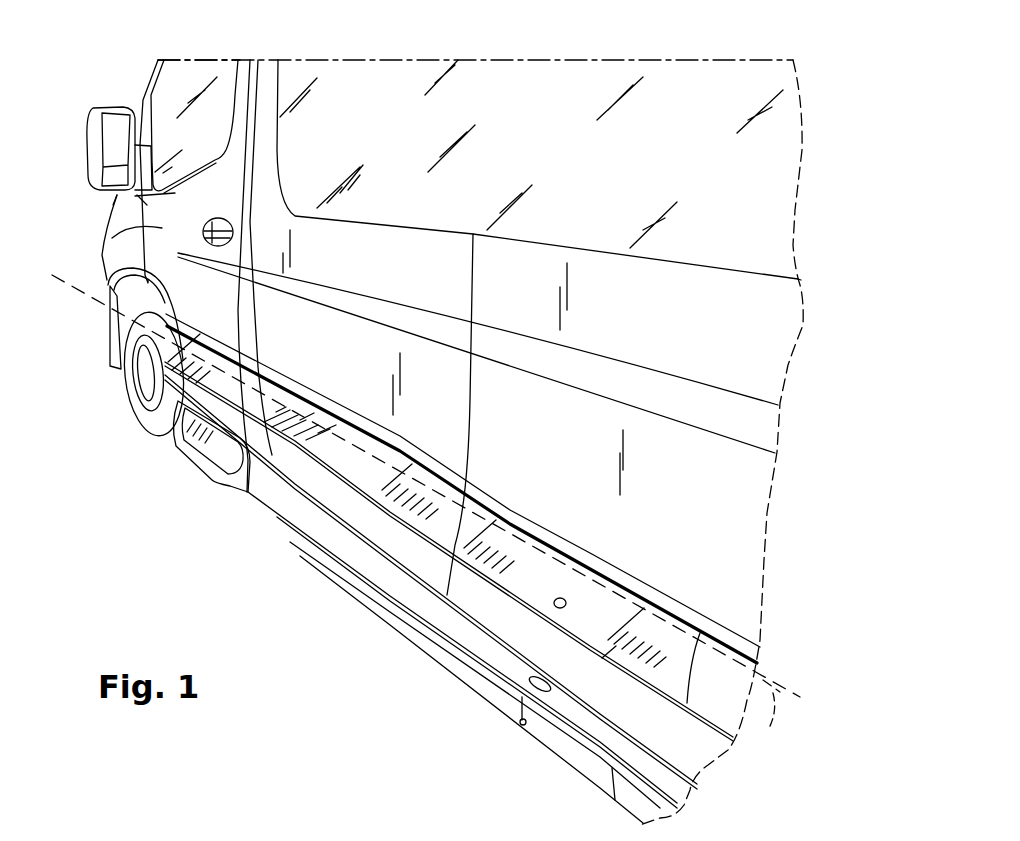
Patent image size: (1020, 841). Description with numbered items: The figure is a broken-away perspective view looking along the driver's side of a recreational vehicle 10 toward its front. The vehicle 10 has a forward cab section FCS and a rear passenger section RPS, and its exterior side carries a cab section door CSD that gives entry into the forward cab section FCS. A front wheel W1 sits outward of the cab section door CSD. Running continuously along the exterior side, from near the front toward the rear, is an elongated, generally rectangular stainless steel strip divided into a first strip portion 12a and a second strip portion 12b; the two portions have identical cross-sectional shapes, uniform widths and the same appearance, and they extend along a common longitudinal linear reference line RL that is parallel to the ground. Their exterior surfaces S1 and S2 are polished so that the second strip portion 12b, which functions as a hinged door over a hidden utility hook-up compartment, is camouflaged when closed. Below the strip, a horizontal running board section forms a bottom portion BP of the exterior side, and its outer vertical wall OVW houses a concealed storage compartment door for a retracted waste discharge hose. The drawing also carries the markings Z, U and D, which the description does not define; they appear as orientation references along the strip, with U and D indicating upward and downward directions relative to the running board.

The recreational vehicle 10 is at (656, 42).
The forward cab section FCS is at (180, 78).
The rear passenger section RPS is at (818, 330).
The cab section door CSD is at (110, 238).
The front wheel W1 is at (148, 418).
The longitudinal axis Z is at (308, 437).
The exterior surface of first strip portion S1 is at (513, 517).
The exterior surface of second strip portion S2 is at (637, 673).
The first strip portion 12a is at (268, 412).
The second strip portion 12b is at (615, 613).
The bottom portion BP is at (380, 626).
The outer vertical wall OVW is at (337, 570).
The upward direction U is at (486, 599).
The downward direction D is at (467, 696).
The reference line RL is at (771, 717).